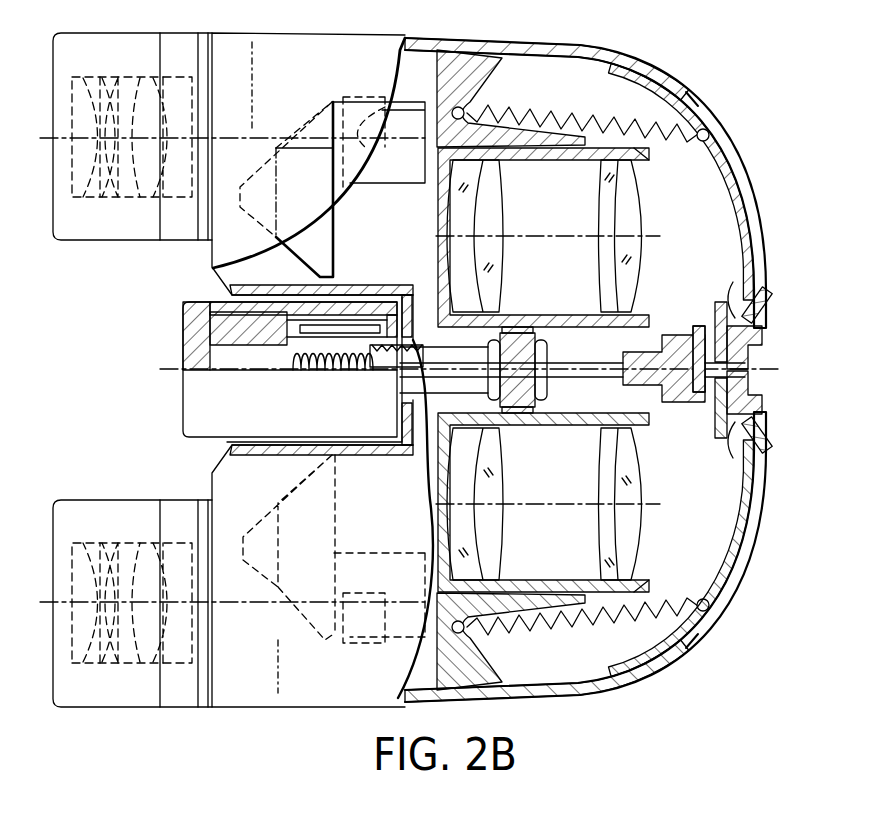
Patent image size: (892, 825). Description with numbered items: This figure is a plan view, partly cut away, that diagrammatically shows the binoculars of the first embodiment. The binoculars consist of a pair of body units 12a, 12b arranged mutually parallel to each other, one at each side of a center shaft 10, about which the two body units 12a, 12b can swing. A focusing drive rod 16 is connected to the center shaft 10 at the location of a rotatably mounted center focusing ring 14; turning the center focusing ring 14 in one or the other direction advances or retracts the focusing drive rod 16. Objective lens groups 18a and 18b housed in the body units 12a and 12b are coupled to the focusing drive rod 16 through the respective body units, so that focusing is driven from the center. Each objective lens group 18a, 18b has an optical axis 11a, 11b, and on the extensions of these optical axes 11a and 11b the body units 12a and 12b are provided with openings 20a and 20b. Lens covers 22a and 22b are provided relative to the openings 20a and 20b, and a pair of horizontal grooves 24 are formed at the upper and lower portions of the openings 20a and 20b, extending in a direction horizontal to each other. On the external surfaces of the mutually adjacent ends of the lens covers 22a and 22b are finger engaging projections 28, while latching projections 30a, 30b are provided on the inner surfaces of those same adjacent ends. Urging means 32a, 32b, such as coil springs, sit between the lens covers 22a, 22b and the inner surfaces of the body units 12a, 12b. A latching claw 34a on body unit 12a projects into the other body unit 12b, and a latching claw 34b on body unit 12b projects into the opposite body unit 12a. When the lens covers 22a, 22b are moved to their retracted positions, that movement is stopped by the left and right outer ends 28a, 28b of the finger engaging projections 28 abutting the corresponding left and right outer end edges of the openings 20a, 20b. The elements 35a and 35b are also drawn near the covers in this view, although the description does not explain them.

The center shaft 10 is at (418, 337).
The optical axis 11a is at (548, 503).
The optical axis 11b is at (548, 236).
The body unit 12a is at (211, 473).
The body unit 12b is at (211, 252).
The center focusing ring 14 is at (182, 328).
The focusing drive rod 16 is at (552, 347).
The objective lens group 18a is at (653, 564).
The objective lens group 18b is at (652, 282).
The opening 20a is at (762, 457).
The opening 20b is at (760, 273).
The lens cover 22a is at (757, 543).
The lens cover 22b is at (757, 190).
The horizontal groove 24 is at (650, 82).
The finger engaging projection 28 is at (770, 317).
The outer end of finger engaging projection 28a is at (767, 440).
The outer end of finger engaging projection 28b is at (767, 293).
The latching projection 30a is at (735, 421).
The latching projection 30b is at (760, 266).
The urging means 32a is at (503, 631).
The urging means 32b is at (510, 113).
The latching claw 34a is at (720, 303).
The latching claw 34b is at (720, 421).
The pin 35a is at (677, 643).
The pin 35b is at (692, 99).